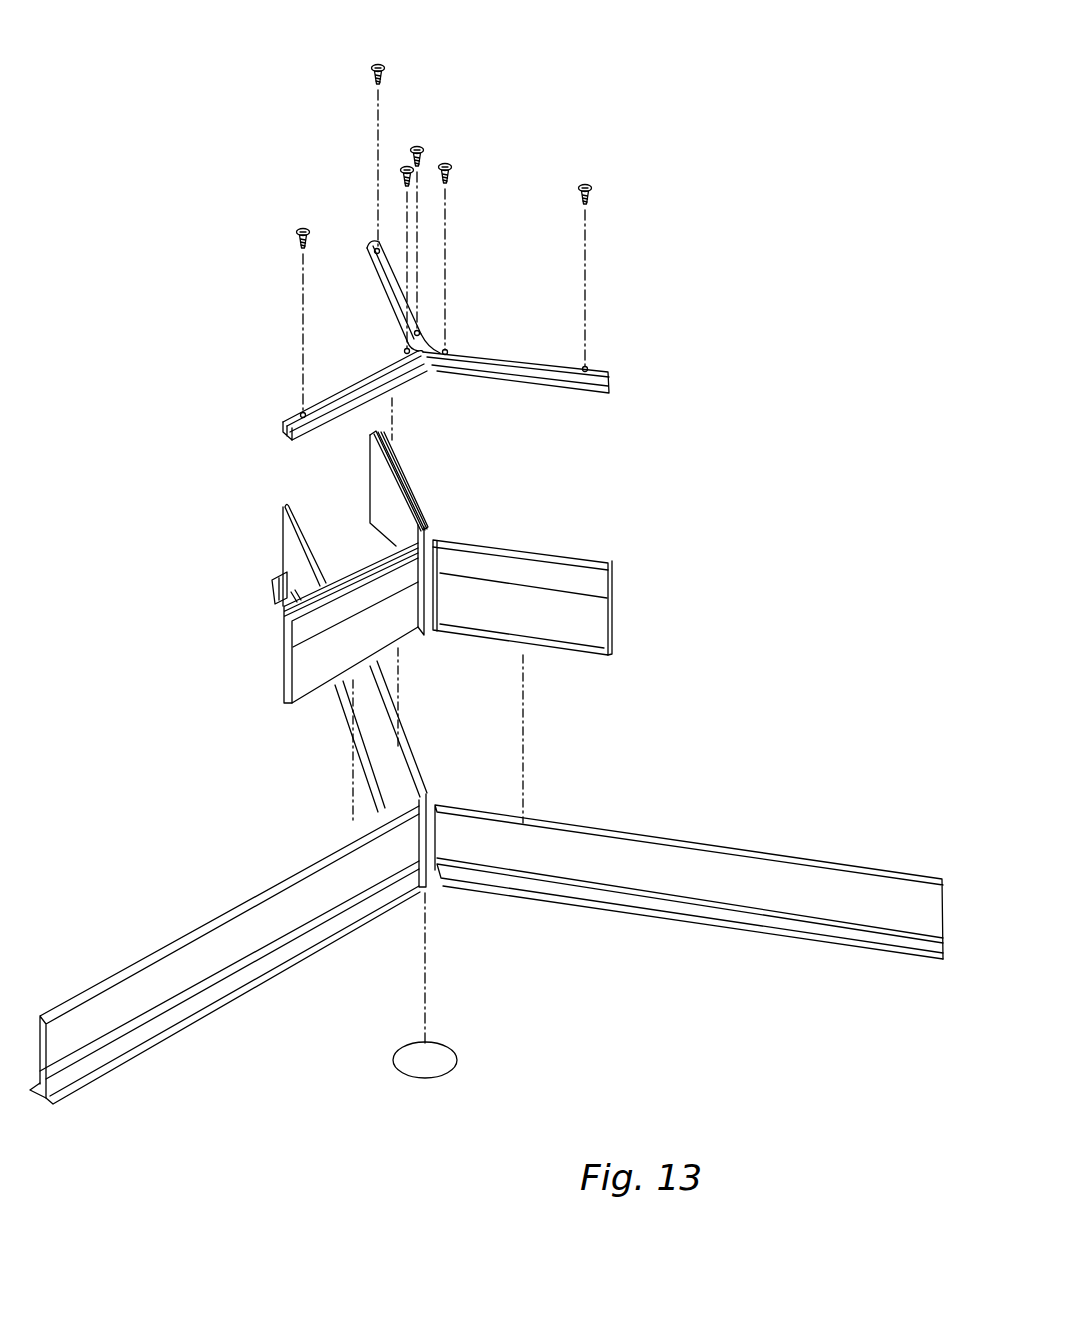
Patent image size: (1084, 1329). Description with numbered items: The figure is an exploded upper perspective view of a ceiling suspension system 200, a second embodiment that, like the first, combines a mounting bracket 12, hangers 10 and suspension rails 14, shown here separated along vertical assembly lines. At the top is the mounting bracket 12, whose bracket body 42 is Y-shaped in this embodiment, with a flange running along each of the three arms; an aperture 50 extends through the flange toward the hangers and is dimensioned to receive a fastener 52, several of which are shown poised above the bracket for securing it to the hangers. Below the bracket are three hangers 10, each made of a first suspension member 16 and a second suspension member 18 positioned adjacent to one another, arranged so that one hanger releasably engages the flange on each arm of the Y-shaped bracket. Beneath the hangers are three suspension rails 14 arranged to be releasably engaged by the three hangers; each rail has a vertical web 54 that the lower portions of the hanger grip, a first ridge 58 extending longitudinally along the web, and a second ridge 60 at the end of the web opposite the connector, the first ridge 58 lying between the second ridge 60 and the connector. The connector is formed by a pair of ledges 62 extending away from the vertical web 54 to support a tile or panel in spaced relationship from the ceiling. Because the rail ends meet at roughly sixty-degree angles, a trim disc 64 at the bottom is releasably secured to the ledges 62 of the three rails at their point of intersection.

The ceiling suspension system 200 is at (190, 102).
The fastener 52 is at (596, 188).
The aperture 50 is at (300, 412).
The mounting bracket 12 is at (615, 372).
The bracket body 42 is at (538, 363).
The hanger 10 is at (412, 477).
The suspension rail 14 is at (280, 540).
The first suspension member 16 is at (562, 622).
The second suspension member 18 is at (312, 667).
The vertical web 54 is at (220, 933).
The first ridge 58 is at (748, 910).
The second ridge 60 is at (663, 838).
The ledges 62 is at (217, 993).
The trim disc 64 is at (447, 1060).